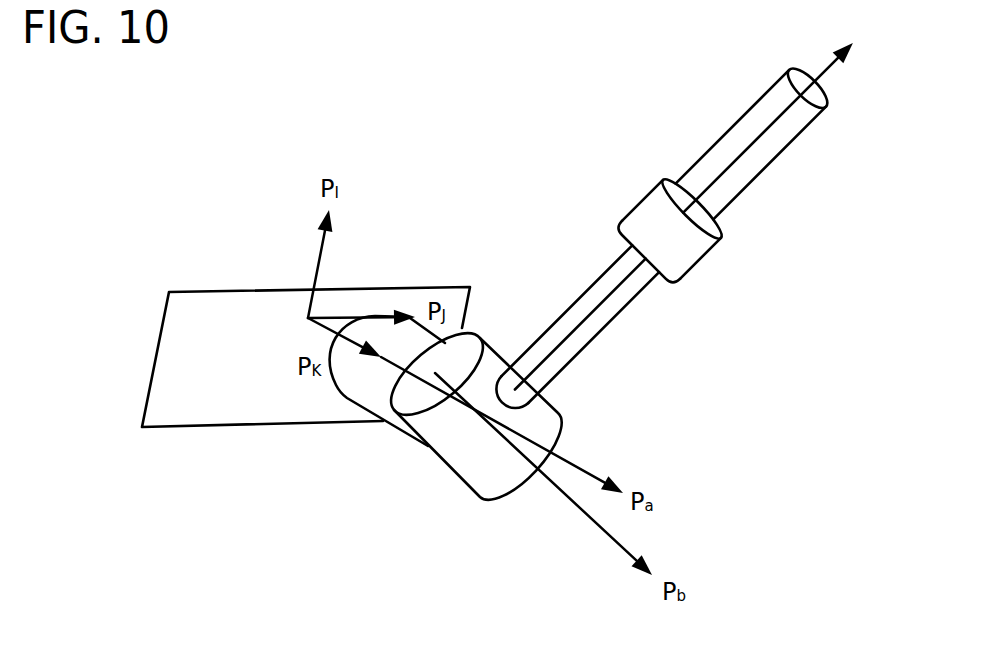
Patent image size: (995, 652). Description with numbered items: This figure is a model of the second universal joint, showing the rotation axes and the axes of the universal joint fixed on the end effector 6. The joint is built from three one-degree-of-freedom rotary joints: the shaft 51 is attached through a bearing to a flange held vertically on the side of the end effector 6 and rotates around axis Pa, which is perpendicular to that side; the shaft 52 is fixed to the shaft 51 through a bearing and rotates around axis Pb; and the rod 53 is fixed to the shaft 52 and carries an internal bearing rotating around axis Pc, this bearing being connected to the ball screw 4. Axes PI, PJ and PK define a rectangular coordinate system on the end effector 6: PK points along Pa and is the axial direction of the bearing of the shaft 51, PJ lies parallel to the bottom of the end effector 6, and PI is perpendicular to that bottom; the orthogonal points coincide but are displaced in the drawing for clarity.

The ball screw 4 is at (773, 140).
The end effector 6 is at (252, 317).
The shaft 51 is at (386, 402).
The shaft 52 is at (478, 452).
The rod 53 is at (595, 290).